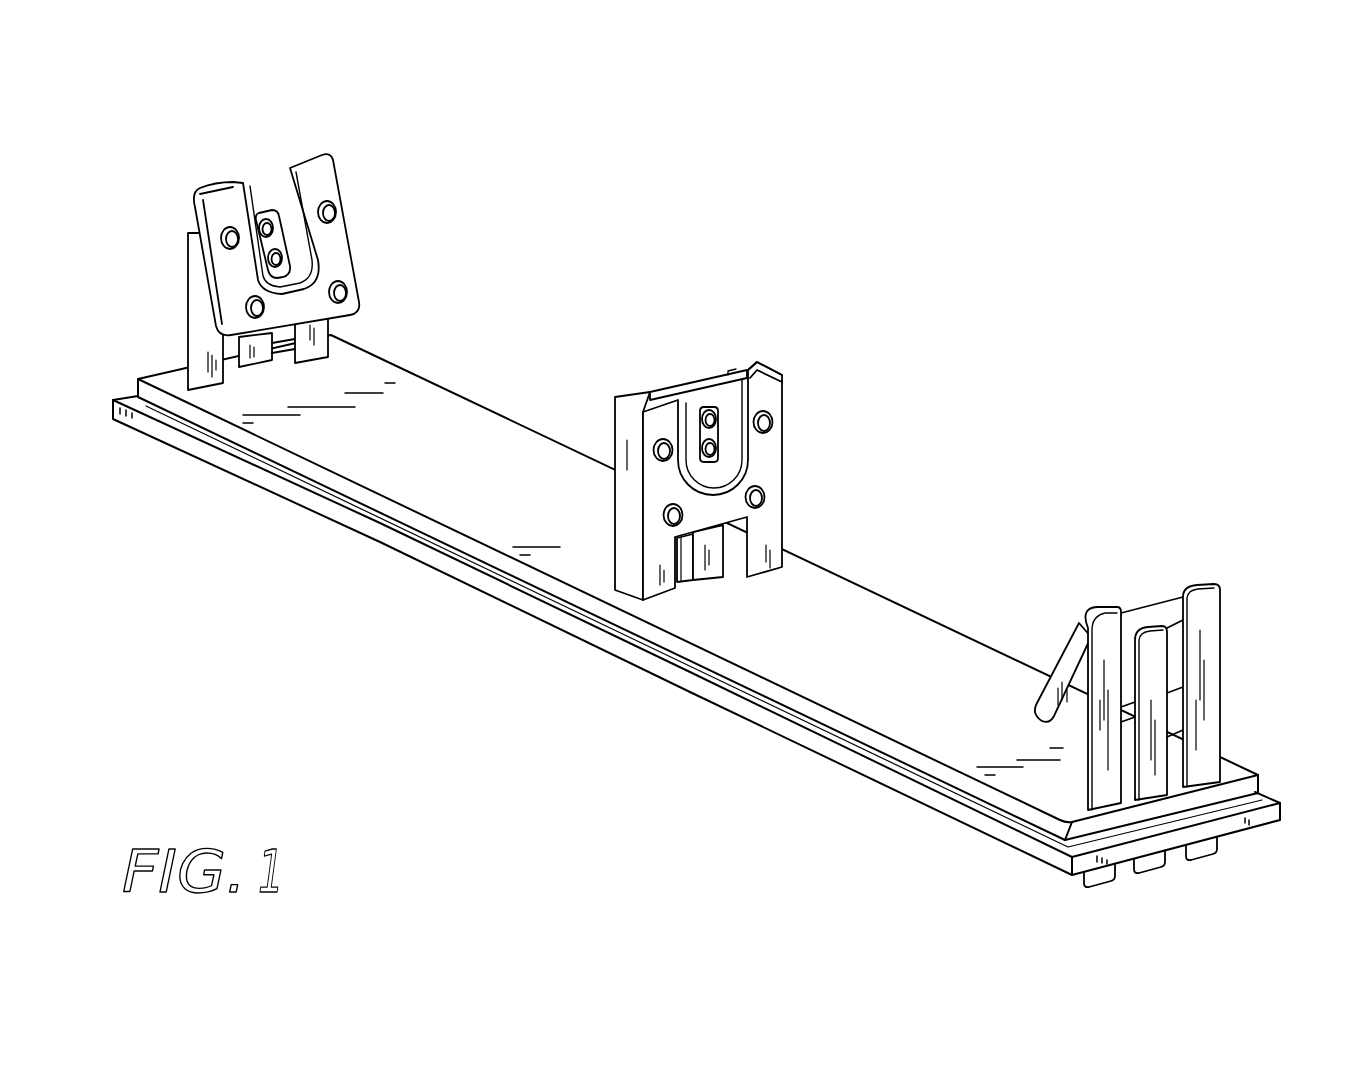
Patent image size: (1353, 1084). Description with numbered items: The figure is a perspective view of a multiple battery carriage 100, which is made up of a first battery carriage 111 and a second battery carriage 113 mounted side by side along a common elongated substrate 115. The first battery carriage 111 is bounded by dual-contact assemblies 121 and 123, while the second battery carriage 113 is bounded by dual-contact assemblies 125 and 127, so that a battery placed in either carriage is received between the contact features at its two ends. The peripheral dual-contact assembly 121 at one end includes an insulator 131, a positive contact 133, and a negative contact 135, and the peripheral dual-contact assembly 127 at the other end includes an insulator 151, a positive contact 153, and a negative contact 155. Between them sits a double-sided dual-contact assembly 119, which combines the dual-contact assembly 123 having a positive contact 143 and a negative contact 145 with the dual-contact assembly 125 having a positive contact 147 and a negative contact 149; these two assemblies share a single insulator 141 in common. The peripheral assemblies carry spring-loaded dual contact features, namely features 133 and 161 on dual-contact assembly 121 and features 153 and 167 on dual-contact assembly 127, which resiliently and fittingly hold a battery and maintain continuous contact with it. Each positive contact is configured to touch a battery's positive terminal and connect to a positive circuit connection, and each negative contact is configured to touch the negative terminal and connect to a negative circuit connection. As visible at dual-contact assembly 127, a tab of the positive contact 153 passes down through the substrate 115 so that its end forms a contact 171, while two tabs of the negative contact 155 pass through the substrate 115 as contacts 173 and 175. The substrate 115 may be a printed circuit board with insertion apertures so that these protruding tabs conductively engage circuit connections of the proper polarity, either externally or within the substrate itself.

The multiple battery carriage 100 is at (1118, 178).
The first battery carriage 111 is at (645, 207).
The second battery carriage 113 is at (1072, 452).
The substrate 115 is at (420, 377).
The double-sided dual-contact assembly 119 is at (783, 325).
The dual-contact assembly 121 is at (368, 148).
The dual-contact assembly 123 is at (730, 352).
The dual-contact assembly 125 is at (800, 393).
The dual-contact assembly 127 is at (1203, 548).
The insulator 131 is at (200, 317).
The positive contact 133 is at (247, 176).
The negative contact 135 is at (360, 255).
The insulator 141 is at (763, 365).
The positive contact 143 is at (680, 380).
The negative contact 145 is at (613, 415).
The positive contact 147 is at (782, 441).
The negative contact 149 is at (785, 468).
The insulator 151 is at (1035, 720).
The positive contact 153 is at (1152, 625).
The negative contact 155 is at (1222, 678).
The spring-loaded dual contact feature 161 is at (362, 200).
The spring-loaded dual contact feature 167 is at (1055, 633).
The contact 171 is at (1163, 873).
The contact 173 is at (1085, 887).
The contact 175 is at (1218, 852).